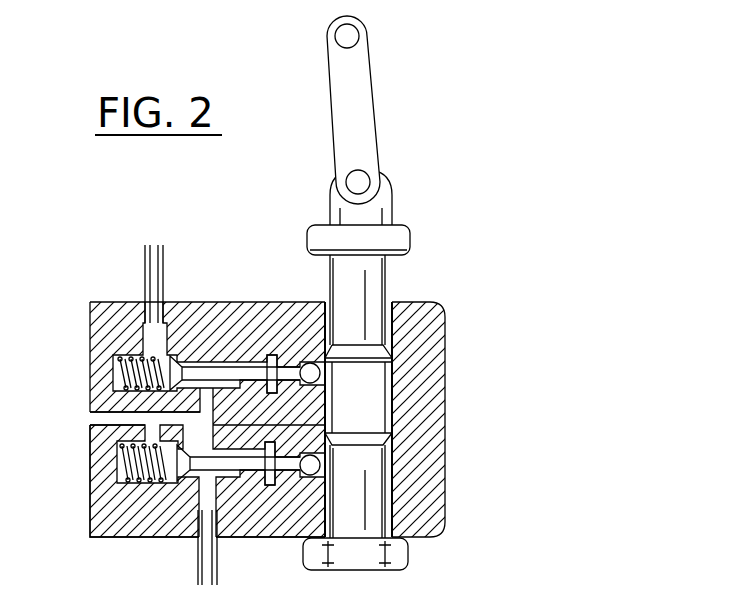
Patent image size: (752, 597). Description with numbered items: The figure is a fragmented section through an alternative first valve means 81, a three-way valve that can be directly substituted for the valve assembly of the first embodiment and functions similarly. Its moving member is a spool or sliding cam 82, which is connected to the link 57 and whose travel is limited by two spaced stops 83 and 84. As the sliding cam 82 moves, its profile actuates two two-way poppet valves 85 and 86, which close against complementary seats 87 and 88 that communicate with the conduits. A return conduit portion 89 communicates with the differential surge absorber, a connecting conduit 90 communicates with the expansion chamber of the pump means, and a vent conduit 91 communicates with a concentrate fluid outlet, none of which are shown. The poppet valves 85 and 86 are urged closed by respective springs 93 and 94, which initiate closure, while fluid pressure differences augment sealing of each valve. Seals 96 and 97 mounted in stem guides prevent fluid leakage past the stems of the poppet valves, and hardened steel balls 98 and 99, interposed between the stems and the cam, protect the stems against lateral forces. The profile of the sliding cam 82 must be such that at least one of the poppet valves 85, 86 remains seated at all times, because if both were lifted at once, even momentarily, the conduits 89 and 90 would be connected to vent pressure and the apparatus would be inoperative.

The link 57 is at (374, 46).
The first valve means 81 is at (424, 262).
The spool or sliding cam 82 is at (388, 215).
The stop 83 is at (318, 240).
The stop 84 is at (408, 553).
The two-way poppet valve 85 is at (228, 320).
The two-way poppet valve 86 is at (266, 500).
The seat 87 is at (183, 318).
The seat 88 is at (180, 532).
The return conduit portion 89 is at (145, 275).
The connecting conduit 90 is at (108, 420).
The vent conduit 91 is at (218, 572).
The spring 93 is at (118, 357).
The spring 94 is at (120, 488).
The seal 96 is at (271, 358).
The seal 97 is at (270, 484).
The hardened steel ball 98 is at (322, 378).
The hardened steel ball 99 is at (322, 465).